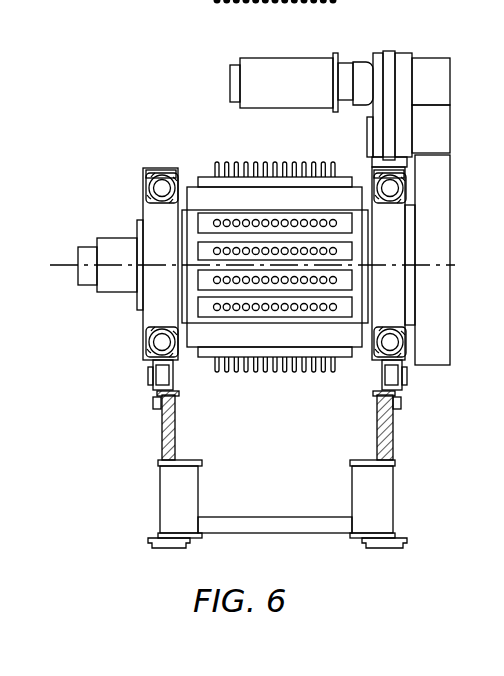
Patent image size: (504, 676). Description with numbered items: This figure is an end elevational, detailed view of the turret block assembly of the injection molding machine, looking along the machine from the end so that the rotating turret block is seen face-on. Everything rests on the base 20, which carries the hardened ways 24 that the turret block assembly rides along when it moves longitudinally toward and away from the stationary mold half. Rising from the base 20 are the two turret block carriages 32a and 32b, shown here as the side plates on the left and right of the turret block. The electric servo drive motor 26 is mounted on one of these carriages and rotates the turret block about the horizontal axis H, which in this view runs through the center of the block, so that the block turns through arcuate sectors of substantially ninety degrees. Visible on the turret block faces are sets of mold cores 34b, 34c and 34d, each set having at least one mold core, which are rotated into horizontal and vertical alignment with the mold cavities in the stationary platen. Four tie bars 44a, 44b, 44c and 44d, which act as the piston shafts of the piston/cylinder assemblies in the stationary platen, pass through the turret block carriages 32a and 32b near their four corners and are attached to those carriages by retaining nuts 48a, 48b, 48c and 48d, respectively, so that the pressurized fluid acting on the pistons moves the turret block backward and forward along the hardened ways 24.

The horizontal axis H is at (72, 265).
The base 20 is at (392, 488).
The hardened ways 24 is at (177, 397).
The electric servo drive motor 26 is at (302, 58).
The turret block carriage 32a is at (394, 294).
The turret block carriage 32b is at (152, 232).
The set of mold cores 34b is at (236, 163).
The set of mold cores 34c is at (336, 249).
The set of mold cores 34d is at (268, 374).
The tie bar 44a is at (392, 190).
The tie bar 44b is at (146, 187).
The tie bar 44c is at (393, 342).
The tie bar 44d is at (158, 342).
The retaining nut 48a is at (404, 180).
The retaining nut 48b is at (154, 175).
The retaining nut 48c is at (398, 362).
The retaining nut 48d is at (152, 356).